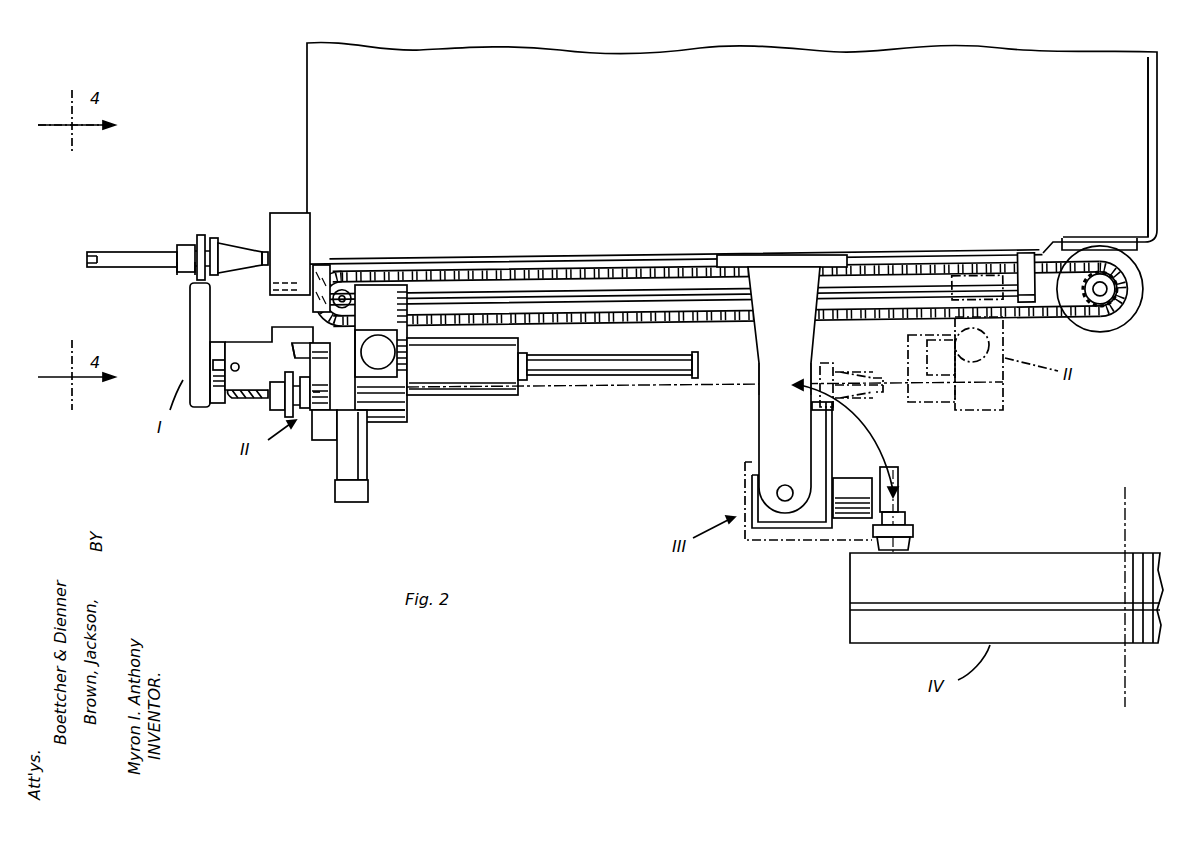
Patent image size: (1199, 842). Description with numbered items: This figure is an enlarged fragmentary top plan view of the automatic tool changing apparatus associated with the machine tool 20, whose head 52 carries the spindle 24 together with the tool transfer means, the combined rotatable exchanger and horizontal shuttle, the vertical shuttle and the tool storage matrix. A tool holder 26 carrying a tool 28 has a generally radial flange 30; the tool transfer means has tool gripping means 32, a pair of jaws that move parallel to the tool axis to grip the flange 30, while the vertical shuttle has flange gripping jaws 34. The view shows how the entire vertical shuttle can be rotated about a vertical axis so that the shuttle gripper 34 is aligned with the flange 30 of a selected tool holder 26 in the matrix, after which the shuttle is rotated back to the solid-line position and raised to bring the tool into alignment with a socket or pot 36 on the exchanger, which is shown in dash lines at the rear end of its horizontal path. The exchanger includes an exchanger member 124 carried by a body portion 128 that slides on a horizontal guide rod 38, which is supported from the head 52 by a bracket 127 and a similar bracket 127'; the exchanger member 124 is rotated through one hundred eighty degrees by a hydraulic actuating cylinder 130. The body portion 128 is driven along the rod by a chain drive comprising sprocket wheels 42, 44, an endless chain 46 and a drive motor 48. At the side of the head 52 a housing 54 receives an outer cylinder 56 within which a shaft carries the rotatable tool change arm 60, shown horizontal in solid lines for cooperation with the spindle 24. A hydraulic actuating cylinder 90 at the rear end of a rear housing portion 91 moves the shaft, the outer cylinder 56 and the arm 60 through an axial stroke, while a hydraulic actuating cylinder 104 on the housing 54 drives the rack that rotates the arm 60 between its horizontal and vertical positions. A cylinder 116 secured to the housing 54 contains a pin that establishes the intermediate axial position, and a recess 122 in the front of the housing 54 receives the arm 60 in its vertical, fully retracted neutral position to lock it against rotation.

The machine tool 20 is at (300, 72).
The spindle 24 is at (282, 213).
The tool holder 26 is at (232, 244).
The tool 28 is at (140, 250).
The radial flange 30 is at (201, 236).
The tool gripping means 32 is at (182, 278).
The flange gripping jaws 34 is at (843, 386).
The socket 36 is at (312, 412).
The horizontal guide rod 38 is at (525, 290).
The sprocket wheel 42 is at (343, 288).
The sprocket wheel 44 is at (1110, 291).
The endless chain 46 is at (567, 325).
The drive motor 48 is at (1135, 308).
The head 52 is at (716, 162).
The housing 54 is at (353, 323).
The outer cylinder 56 is at (238, 341).
The tool change arm 60 is at (186, 322).
The hydraulic actuating cylinder 90 is at (636, 357).
The rear housing portion 91 is at (503, 389).
The hydraulic actuating cylinder 104 is at (368, 470).
The cylinder 116 is at (318, 438).
The recess 122 is at (292, 345).
The exchanger member 124 is at (350, 399).
The bracket 127 is at (298, 293).
The chain housing 127' is at (1005, 254).
The body portion 128 is at (406, 410).
The hydraulic actuating cylinder 130 is at (383, 349).